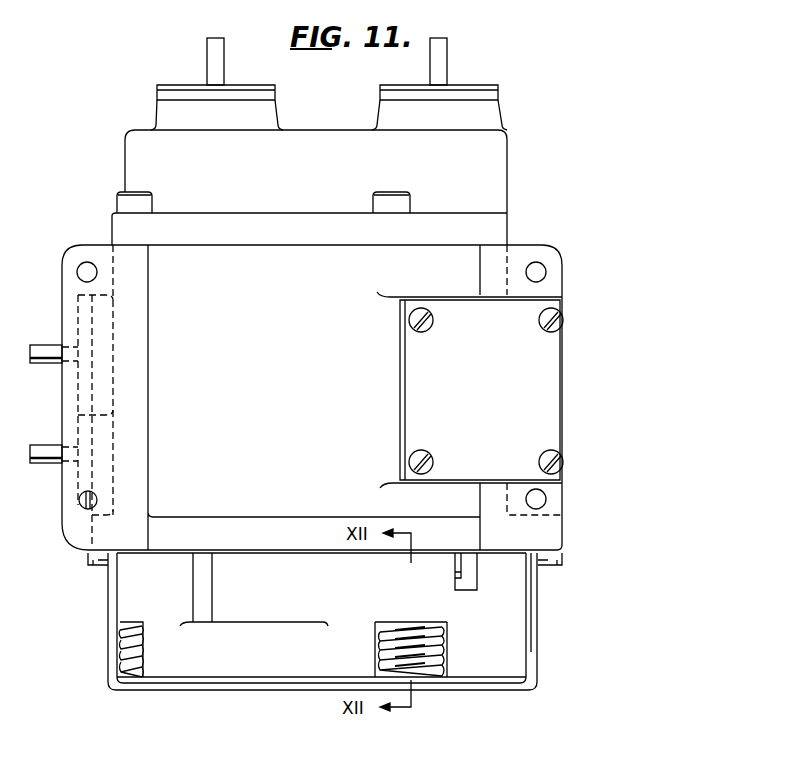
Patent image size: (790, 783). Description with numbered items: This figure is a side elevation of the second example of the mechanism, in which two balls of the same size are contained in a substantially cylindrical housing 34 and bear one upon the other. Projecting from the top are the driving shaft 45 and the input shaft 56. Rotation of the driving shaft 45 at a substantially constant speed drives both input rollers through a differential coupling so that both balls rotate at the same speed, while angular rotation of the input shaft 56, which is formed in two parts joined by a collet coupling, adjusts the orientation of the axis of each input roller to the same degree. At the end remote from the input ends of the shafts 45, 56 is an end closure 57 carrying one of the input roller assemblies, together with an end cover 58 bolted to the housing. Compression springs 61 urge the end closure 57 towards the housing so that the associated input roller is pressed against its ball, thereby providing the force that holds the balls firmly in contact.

The housing 34 is at (291, 365).
The driving shaft 45 is at (207, 56).
The input shaft 56 is at (442, 56).
The end closure 57 is at (513, 606).
The end cover 58 is at (497, 689).
The compression spring 61 is at (445, 650).